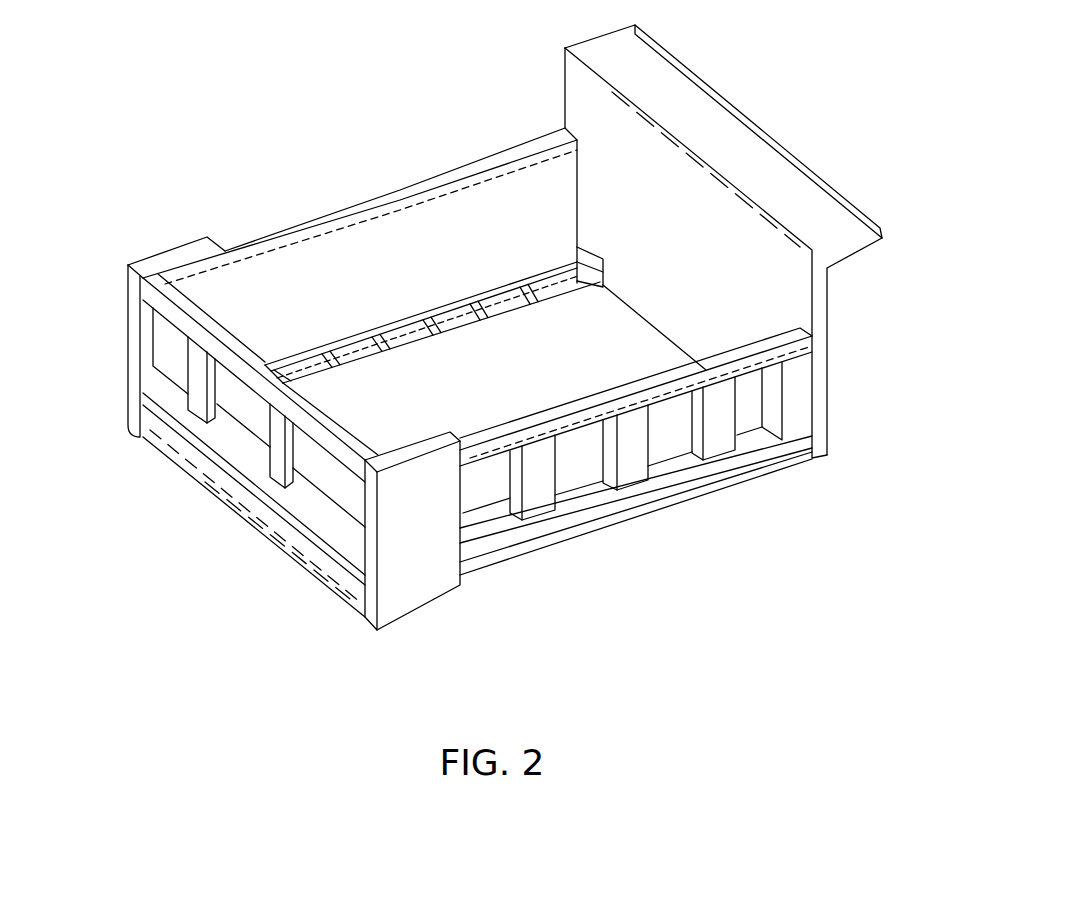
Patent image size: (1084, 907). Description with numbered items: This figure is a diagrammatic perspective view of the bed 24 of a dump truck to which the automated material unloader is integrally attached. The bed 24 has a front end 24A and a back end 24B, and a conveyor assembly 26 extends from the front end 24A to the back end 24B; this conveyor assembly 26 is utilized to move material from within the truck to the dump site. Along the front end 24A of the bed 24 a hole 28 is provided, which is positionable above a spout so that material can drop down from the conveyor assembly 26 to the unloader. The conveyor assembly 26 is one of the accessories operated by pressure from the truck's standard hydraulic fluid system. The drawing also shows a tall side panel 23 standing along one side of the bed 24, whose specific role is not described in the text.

The side panel 23 is at (577, 93).
The bed 24 is at (699, 587).
The front end 24A is at (593, 339).
The back end 24B is at (338, 420).
The conveyor assembly 26 is at (338, 337).
The hole 28 is at (585, 258).